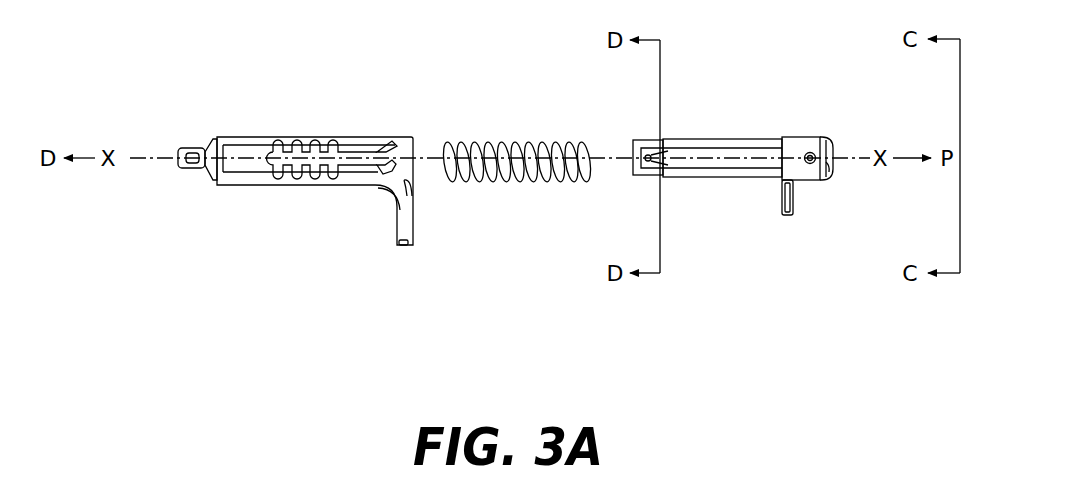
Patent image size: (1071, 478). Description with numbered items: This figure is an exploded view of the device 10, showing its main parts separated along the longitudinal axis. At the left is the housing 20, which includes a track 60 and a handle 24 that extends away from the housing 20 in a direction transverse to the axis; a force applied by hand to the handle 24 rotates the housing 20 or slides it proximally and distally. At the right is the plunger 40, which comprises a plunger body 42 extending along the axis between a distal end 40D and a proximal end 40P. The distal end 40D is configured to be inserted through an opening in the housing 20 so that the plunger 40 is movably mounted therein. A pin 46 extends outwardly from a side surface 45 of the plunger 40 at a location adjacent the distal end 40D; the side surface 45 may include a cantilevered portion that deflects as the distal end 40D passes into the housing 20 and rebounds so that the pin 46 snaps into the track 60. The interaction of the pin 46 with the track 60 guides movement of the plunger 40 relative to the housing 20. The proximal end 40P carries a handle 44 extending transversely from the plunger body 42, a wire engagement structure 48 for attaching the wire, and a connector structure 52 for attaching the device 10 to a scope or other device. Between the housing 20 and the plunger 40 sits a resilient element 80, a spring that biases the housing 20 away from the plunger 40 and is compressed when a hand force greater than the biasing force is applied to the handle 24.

The device 10 is at (484, 236).
The housing 20 is at (244, 197).
The handle 24 is at (402, 243).
The track 60 is at (395, 146).
The resilient element 80 is at (510, 183).
The plunger 40 is at (812, 199).
The distal end of plunger 40D is at (630, 148).
The proximal end of plunger 40P is at (830, 139).
The plunger body 42 is at (760, 138).
The handle 44 is at (788, 215).
The side surface 45 is at (667, 168).
The pin 46 is at (665, 153).
The wire engagement structure 48 is at (830, 178).
The connector structure 52 is at (813, 153).